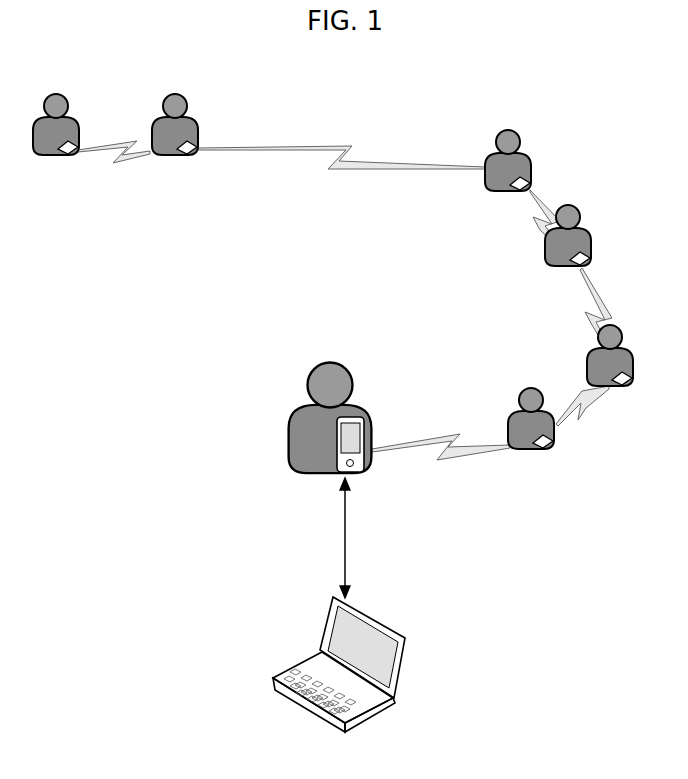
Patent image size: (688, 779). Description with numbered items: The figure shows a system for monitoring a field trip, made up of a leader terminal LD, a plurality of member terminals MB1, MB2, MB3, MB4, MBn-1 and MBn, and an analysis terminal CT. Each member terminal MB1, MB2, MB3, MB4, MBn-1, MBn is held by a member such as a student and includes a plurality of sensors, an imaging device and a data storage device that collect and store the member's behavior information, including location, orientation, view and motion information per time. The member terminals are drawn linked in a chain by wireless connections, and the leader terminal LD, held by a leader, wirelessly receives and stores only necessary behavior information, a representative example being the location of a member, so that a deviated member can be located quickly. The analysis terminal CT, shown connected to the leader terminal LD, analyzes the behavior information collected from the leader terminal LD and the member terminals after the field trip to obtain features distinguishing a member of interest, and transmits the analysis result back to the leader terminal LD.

The member terminal MBn is at (56, 138).
The member terminal MBn-1 is at (175, 138).
The member terminal MB4 is at (524, 160).
The member terminal MB3 is at (584, 236).
The member terminal MB2 is at (626, 357).
The member terminal MB1 is at (531, 427).
The leader terminal LD is at (330, 427).
The analysis terminal CT is at (347, 664).